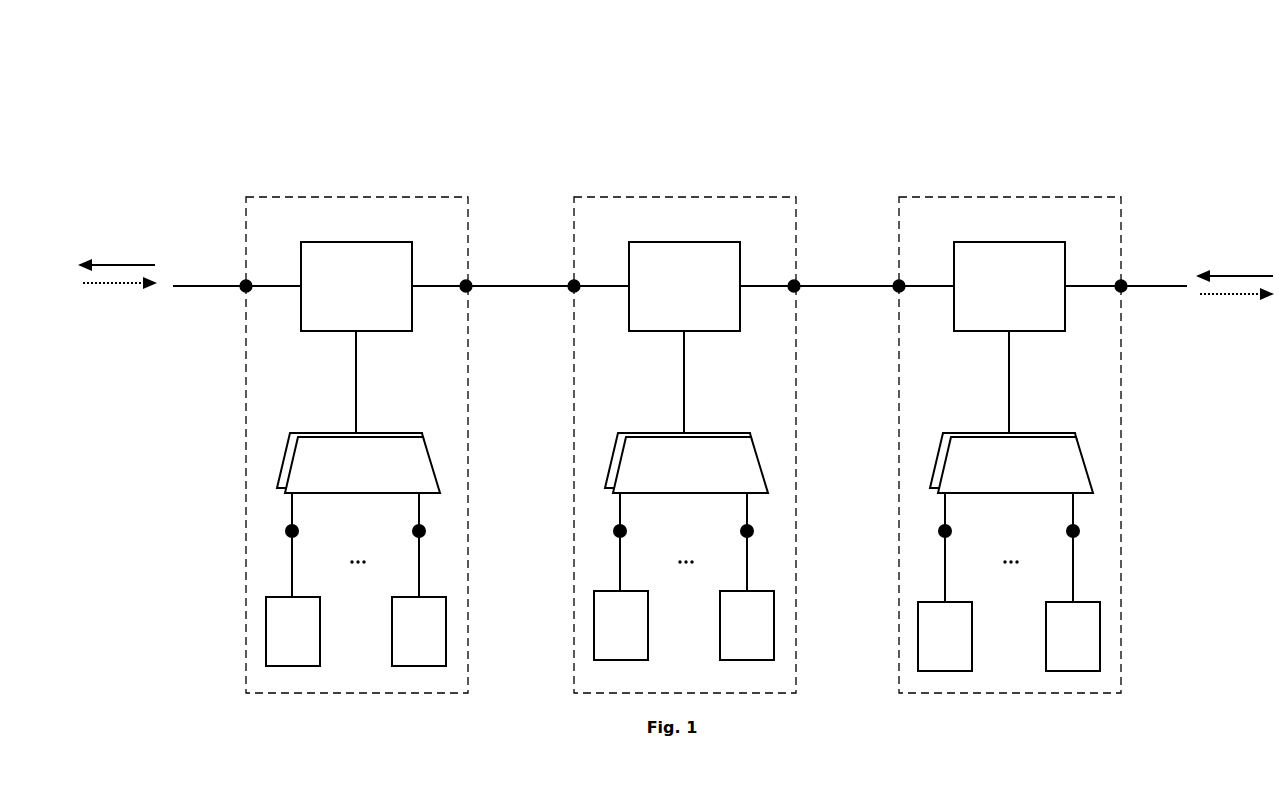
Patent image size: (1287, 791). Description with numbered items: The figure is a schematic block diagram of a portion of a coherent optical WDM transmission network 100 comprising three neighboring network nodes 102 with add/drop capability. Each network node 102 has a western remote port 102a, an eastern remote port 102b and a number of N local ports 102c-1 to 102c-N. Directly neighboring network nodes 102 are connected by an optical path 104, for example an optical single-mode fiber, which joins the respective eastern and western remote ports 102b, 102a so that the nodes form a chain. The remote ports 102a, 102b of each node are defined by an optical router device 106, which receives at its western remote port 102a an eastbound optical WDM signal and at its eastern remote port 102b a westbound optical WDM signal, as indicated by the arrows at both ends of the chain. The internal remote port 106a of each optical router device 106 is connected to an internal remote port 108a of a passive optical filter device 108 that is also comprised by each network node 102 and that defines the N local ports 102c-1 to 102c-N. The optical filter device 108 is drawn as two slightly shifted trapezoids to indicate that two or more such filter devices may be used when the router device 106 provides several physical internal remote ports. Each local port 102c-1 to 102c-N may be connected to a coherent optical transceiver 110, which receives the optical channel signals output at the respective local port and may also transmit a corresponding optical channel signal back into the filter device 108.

The coherent optical WDM transmission network 100 is at (604, 122).
The network node 102 is at (372, 197).
The western remote port 102a is at (244, 292).
The eastern remote port 102b is at (469, 290).
The local port 102c-1 is at (288, 537).
The local port 102c-N is at (422, 537).
The optical path 104 is at (216, 284).
The optical router device 106 is at (683, 286).
The internal remote port 106a is at (352, 340).
The passive optical filter device 108 is at (685, 463).
The internal remote port 108a is at (358, 425).
The coherent optical transceiver 110 is at (683, 631).